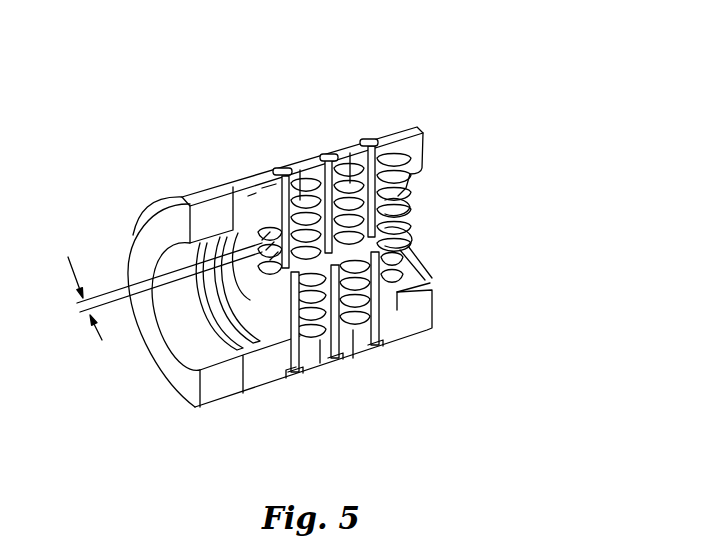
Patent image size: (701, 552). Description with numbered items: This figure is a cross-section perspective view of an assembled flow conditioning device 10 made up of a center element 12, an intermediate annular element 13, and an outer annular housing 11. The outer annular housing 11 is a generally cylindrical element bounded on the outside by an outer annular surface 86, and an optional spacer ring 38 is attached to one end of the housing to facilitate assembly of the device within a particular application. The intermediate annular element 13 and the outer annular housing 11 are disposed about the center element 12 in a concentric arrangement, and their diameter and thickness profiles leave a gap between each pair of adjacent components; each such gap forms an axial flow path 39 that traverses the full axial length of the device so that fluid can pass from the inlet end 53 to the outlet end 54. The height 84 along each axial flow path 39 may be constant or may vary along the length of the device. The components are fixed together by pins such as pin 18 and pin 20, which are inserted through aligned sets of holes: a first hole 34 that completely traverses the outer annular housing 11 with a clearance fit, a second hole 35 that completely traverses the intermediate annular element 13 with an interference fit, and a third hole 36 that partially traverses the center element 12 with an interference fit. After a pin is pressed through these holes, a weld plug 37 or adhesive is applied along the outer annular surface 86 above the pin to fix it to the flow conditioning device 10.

The flow conditioning device 10 is at (440, 108).
The outer annular housing 11 is at (440, 142).
The center element 12 is at (425, 236).
The intermediate annular element 13 is at (422, 204).
The pin 18 is at (270, 185).
The pin 20 is at (383, 347).
The first hole 34 is at (290, 372).
The second hole 35 is at (195, 407).
The third hole 36 is at (235, 330).
The weld plug 37 is at (330, 152).
The spacer ring 38 is at (185, 200).
The axial flow path 39 is at (400, 188).
The inlet end 53 is at (241, 398).
The outlet end 54 is at (407, 124).
The height 84 is at (159, 284).
The outer annular surface 86 is at (252, 193).